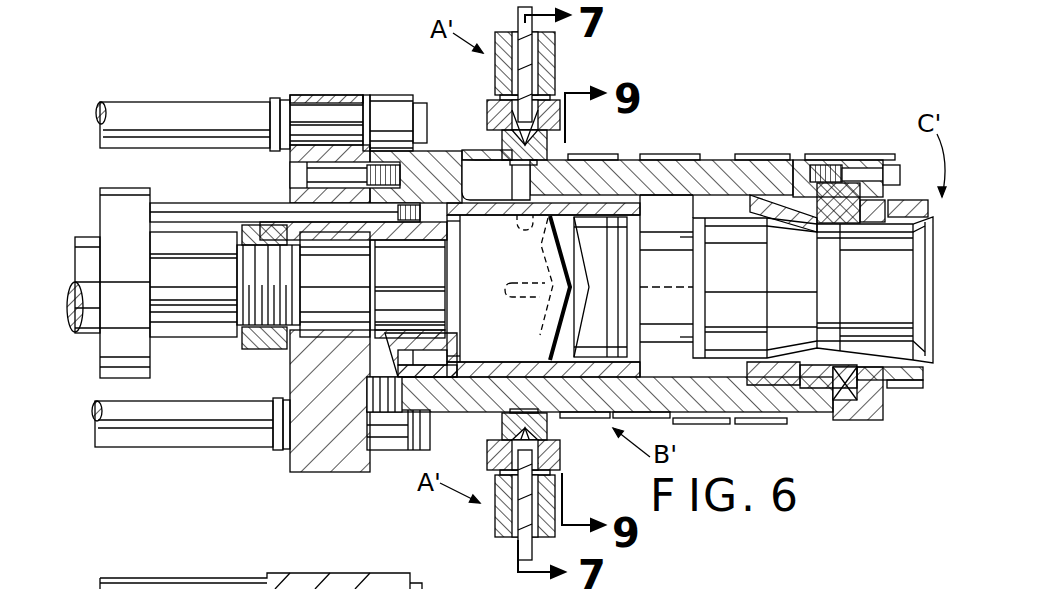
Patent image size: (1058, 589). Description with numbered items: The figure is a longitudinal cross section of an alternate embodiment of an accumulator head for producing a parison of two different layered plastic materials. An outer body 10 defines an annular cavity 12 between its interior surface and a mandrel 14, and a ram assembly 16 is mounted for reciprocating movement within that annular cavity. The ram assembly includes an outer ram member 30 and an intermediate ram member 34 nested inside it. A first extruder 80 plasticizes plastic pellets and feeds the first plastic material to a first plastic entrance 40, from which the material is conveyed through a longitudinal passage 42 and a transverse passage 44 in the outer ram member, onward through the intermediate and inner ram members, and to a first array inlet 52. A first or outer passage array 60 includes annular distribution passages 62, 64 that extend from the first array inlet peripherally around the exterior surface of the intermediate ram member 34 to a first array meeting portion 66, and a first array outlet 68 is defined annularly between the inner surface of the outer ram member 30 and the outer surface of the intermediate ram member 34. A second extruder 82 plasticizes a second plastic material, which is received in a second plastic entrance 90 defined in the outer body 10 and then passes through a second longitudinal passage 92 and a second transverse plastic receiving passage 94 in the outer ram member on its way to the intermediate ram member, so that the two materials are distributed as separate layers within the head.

The outer body 10 is at (753, 177).
The annular cavity 12 is at (685, 231).
The mandrel 14 is at (685, 328).
The ram assembly 16 is at (657, 195).
The outer ram member 30 is at (622, 192).
The intermediate ram member 34 is at (500, 262).
The first plastic entrance 40 is at (502, 418).
The longitudinal passage 42 is at (460, 382).
The transverse passage 44 is at (523, 380).
The first array inlet 52 is at (520, 287).
The first or outer passage array 60 is at (528, 307).
The annular distribution passage 62 is at (562, 378).
The annular distribution passage 64 is at (570, 225).
The first array meeting portion 66 is at (573, 283).
The first array outlet 68 is at (630, 360).
The first extruder 80 is at (493, 527).
The second extruder 82 is at (497, 80).
The second plastic entrance 90 is at (517, 178).
The second longitudinal passage 92 is at (461, 193).
The second transverse plastic receiving passage 94 is at (518, 218).